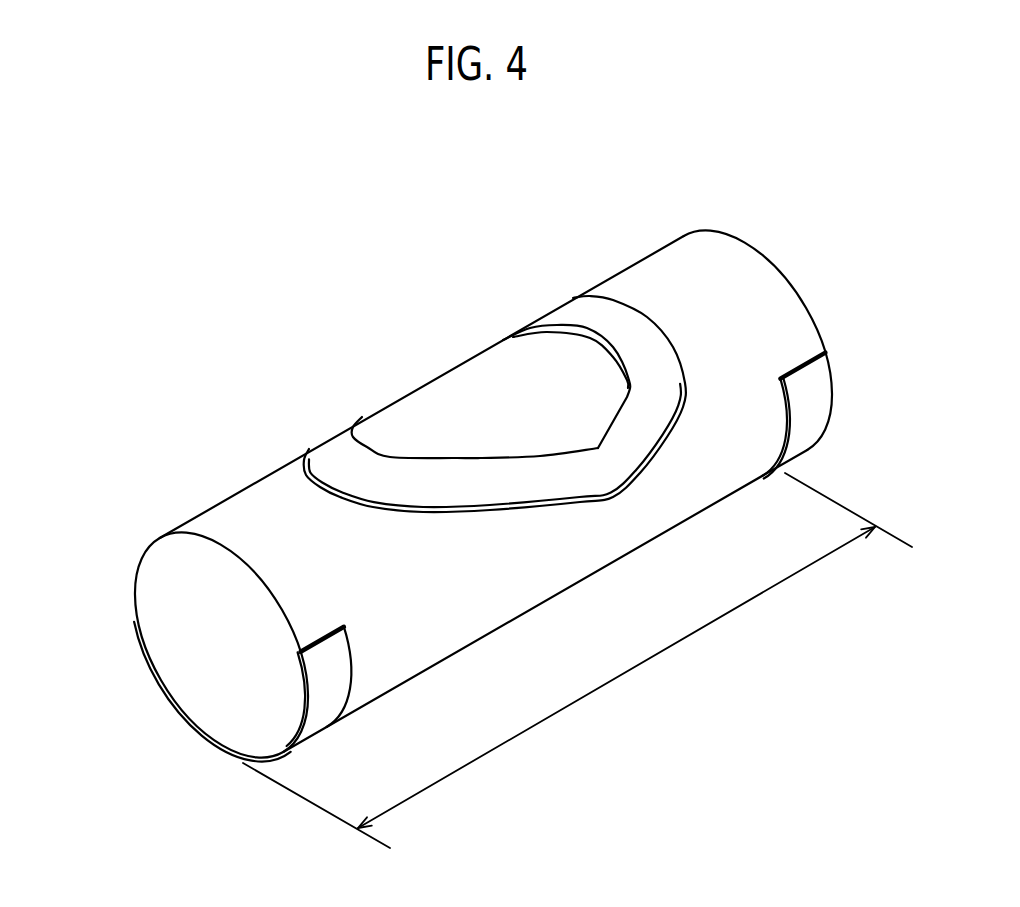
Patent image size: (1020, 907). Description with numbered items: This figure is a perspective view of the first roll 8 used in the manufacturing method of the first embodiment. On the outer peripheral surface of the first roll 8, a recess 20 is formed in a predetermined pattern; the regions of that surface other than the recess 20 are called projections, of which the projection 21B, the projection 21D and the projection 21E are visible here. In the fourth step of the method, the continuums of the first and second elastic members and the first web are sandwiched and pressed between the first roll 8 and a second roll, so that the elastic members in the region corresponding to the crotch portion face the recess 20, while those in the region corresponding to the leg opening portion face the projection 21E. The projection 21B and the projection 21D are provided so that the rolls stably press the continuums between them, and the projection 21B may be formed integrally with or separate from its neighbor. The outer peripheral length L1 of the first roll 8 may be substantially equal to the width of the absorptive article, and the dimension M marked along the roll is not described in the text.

The recess 20 is at (663, 281).
The projection 21B is at (822, 376).
The projection 21D is at (343, 658).
The projection 21E is at (468, 488).
The outer peripheral length L1 is at (134, 603).
The axial length dimension M is at (577, 660).
The first roll 8 is at (263, 788).